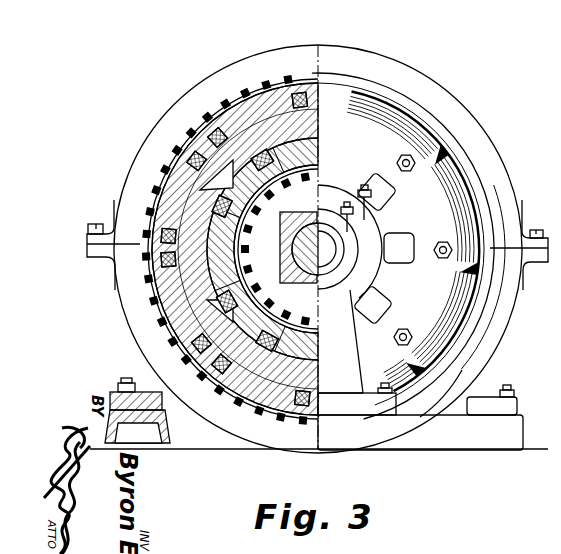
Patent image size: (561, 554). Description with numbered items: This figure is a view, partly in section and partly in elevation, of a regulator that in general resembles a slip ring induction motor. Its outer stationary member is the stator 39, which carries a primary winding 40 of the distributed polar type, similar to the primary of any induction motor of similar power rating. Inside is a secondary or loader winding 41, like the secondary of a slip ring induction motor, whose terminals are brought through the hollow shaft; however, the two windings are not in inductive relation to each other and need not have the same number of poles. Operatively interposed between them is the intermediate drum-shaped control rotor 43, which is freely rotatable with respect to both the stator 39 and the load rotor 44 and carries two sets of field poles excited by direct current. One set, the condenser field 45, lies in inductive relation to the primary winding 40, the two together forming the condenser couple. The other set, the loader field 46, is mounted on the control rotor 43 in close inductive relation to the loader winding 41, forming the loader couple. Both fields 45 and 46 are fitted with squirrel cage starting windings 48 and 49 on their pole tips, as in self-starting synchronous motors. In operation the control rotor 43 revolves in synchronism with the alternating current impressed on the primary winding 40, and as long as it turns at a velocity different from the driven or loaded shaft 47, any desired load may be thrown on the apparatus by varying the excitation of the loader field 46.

The stator 39 is at (398, 62).
The primary winding 40 is at (260, 88).
The secondary winding 41 is at (272, 228).
The control rotor 43 is at (436, 200).
The load rotor 44 is at (318, 295).
The condenser field 45 is at (272, 100).
The loader field 46 is at (318, 343).
The driven or loaded shaft 47 is at (322, 245).
The squirrel cage starting winding 48 is at (197, 130).
The squirrel cage starting winding 49 is at (258, 190).